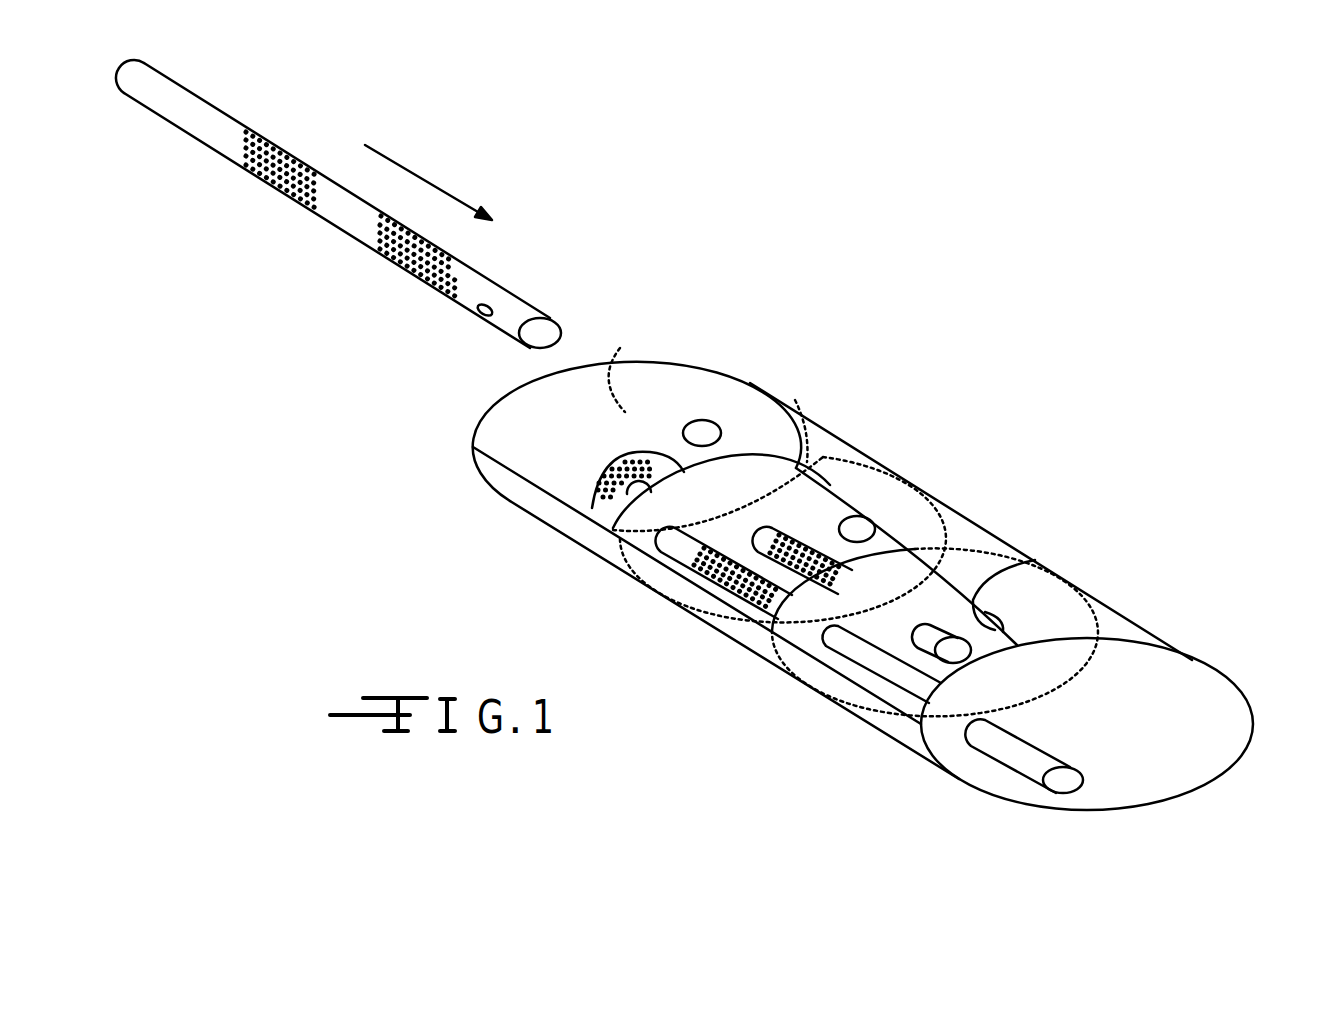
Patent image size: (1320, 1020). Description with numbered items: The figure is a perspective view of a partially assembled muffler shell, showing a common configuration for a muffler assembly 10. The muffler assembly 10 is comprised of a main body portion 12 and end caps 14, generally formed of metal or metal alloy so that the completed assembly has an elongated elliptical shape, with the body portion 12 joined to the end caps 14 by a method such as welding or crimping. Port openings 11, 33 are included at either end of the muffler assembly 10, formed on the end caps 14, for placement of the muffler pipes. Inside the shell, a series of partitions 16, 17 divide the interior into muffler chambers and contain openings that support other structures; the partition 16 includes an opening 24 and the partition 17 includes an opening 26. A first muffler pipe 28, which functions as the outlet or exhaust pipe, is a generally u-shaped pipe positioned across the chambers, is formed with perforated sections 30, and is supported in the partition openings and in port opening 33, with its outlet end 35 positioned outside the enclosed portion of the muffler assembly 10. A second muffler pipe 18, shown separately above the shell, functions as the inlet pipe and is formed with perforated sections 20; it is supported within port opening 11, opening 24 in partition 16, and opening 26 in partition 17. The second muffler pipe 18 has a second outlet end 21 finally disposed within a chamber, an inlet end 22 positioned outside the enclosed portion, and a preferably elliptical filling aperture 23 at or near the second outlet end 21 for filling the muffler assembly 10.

The muffler assembly 10 is at (957, 423).
The port opening 11 is at (702, 432).
The main body portion 12 is at (747, 636).
The end caps 14 is at (618, 350).
The partition 16 is at (905, 517).
The partition 17 is at (1047, 593).
The second muffler pipe 18 is at (286, 232).
The perforated sections 20 is at (403, 267).
The second outlet end 21 is at (553, 331).
The inlet end 22 is at (128, 64).
The filling aperture 23 is at (482, 316).
The opening 24 is at (857, 527).
The opening 26 is at (996, 603).
The first muffler pipe 28 is at (575, 515).
The perforated sections 30 is at (693, 571).
The port opening 33 is at (965, 770).
The outlet end 35 is at (1027, 768).